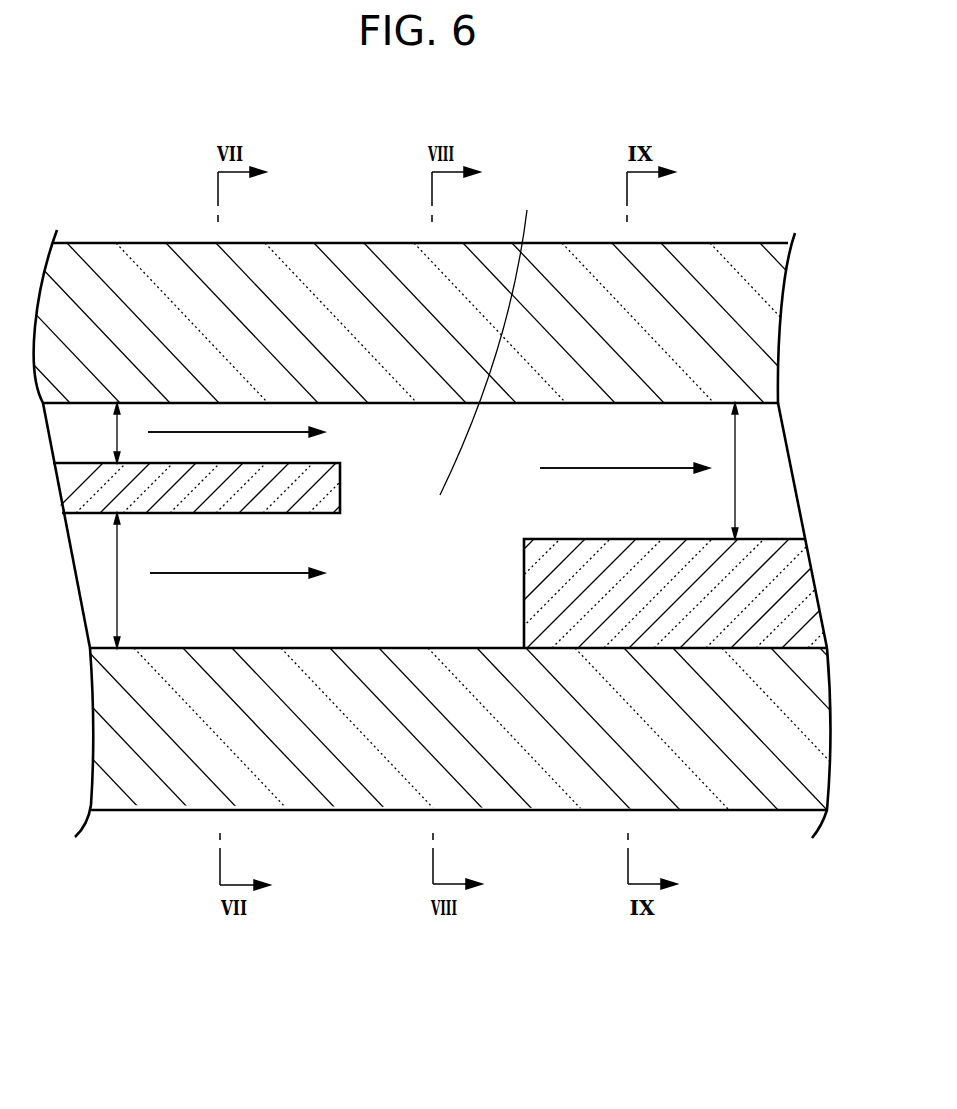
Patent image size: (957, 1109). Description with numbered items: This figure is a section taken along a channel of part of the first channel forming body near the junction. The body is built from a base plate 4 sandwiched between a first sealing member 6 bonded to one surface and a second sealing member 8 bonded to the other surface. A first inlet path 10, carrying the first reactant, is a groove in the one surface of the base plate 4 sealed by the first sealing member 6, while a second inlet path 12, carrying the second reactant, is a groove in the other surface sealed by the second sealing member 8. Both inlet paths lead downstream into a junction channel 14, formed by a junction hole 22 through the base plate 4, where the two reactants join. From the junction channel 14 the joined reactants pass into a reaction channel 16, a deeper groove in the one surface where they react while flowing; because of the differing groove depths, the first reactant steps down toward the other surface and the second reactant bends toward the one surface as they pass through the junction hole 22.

The base plate 4 is at (810, 595).
The first sealing member 6 is at (758, 320).
The second sealing member 8 is at (788, 747).
The first inlet path 10 is at (155, 415).
The second inlet path 12 is at (195, 597).
The junction channel 14 is at (440, 495).
The reaction channel 16 is at (683, 445).
The junction hole 22 is at (483, 352).